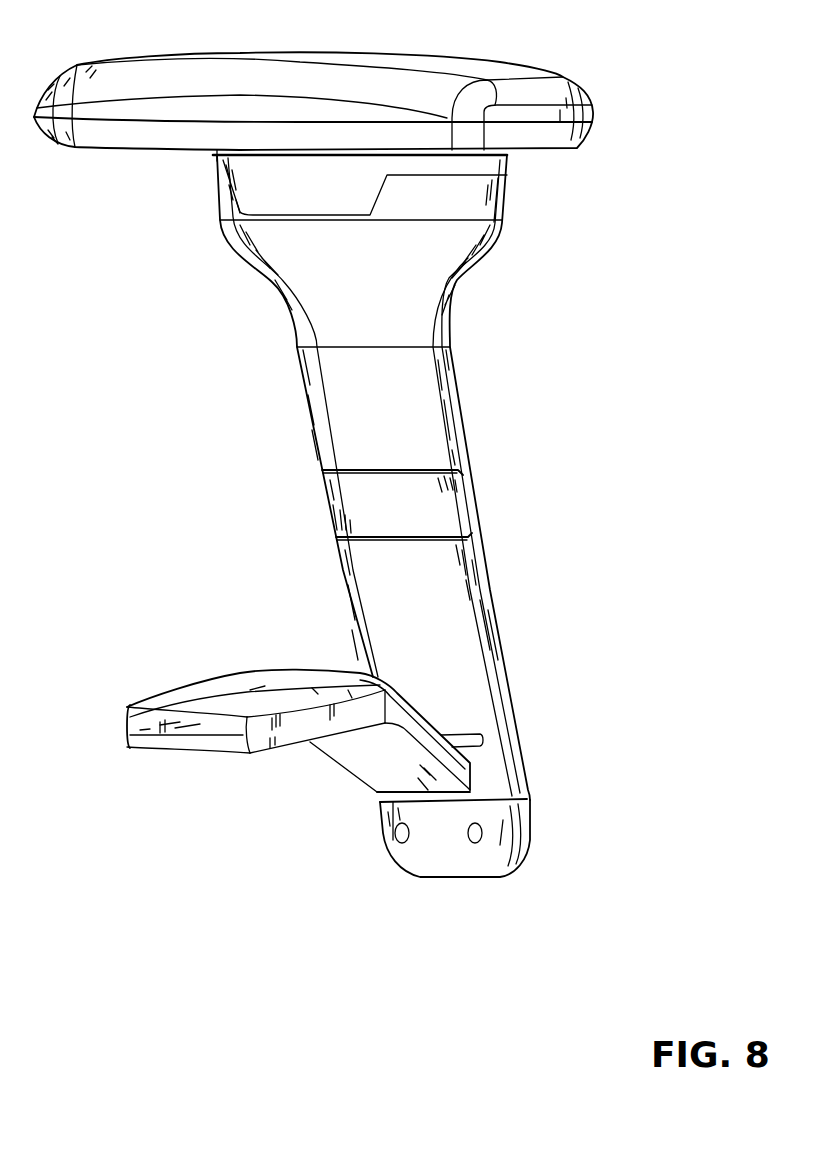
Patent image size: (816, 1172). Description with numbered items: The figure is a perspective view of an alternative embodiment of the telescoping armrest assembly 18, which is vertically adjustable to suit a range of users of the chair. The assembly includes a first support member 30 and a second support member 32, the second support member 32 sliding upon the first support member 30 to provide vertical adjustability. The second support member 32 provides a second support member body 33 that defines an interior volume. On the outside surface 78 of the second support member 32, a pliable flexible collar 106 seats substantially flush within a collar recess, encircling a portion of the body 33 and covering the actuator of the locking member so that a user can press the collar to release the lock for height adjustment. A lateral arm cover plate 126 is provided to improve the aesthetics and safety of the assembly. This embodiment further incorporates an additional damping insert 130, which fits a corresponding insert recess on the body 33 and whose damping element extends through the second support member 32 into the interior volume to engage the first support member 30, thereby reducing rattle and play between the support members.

The telescoping armrest assembly 18 is at (661, 65).
The outside surface 78 is at (420, 413).
The flexible collar 106 is at (440, 510).
The second support member 32 is at (510, 606).
The second support member body 33 is at (508, 667).
The lateral arm cover plate 126 is at (263, 680).
The damping insert 130 is at (468, 743).
The first support member 30 is at (407, 877).